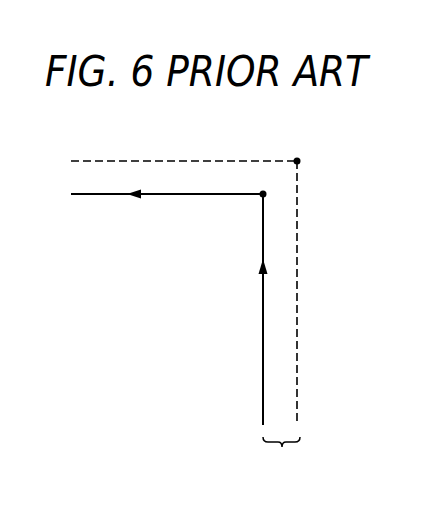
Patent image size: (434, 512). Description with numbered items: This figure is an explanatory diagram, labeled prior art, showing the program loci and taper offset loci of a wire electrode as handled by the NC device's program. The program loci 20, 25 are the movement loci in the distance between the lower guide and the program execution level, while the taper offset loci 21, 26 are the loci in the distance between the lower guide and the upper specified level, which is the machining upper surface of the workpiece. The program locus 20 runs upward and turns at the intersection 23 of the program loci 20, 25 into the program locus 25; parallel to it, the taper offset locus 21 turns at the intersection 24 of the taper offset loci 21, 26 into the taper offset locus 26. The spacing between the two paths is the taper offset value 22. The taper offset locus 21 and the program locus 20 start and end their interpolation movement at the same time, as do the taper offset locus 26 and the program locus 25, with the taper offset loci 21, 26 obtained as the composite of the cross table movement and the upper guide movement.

The program locus 20 is at (262, 356).
The taper offset locus 21 is at (300, 283).
The taper offset value 22 is at (282, 458).
The intersection of the program loci 23 is at (260, 198).
The intersection of the taper offset loci 24 is at (303, 161).
The program locus 25 is at (140, 198).
The taper offset locus 26 is at (137, 159).